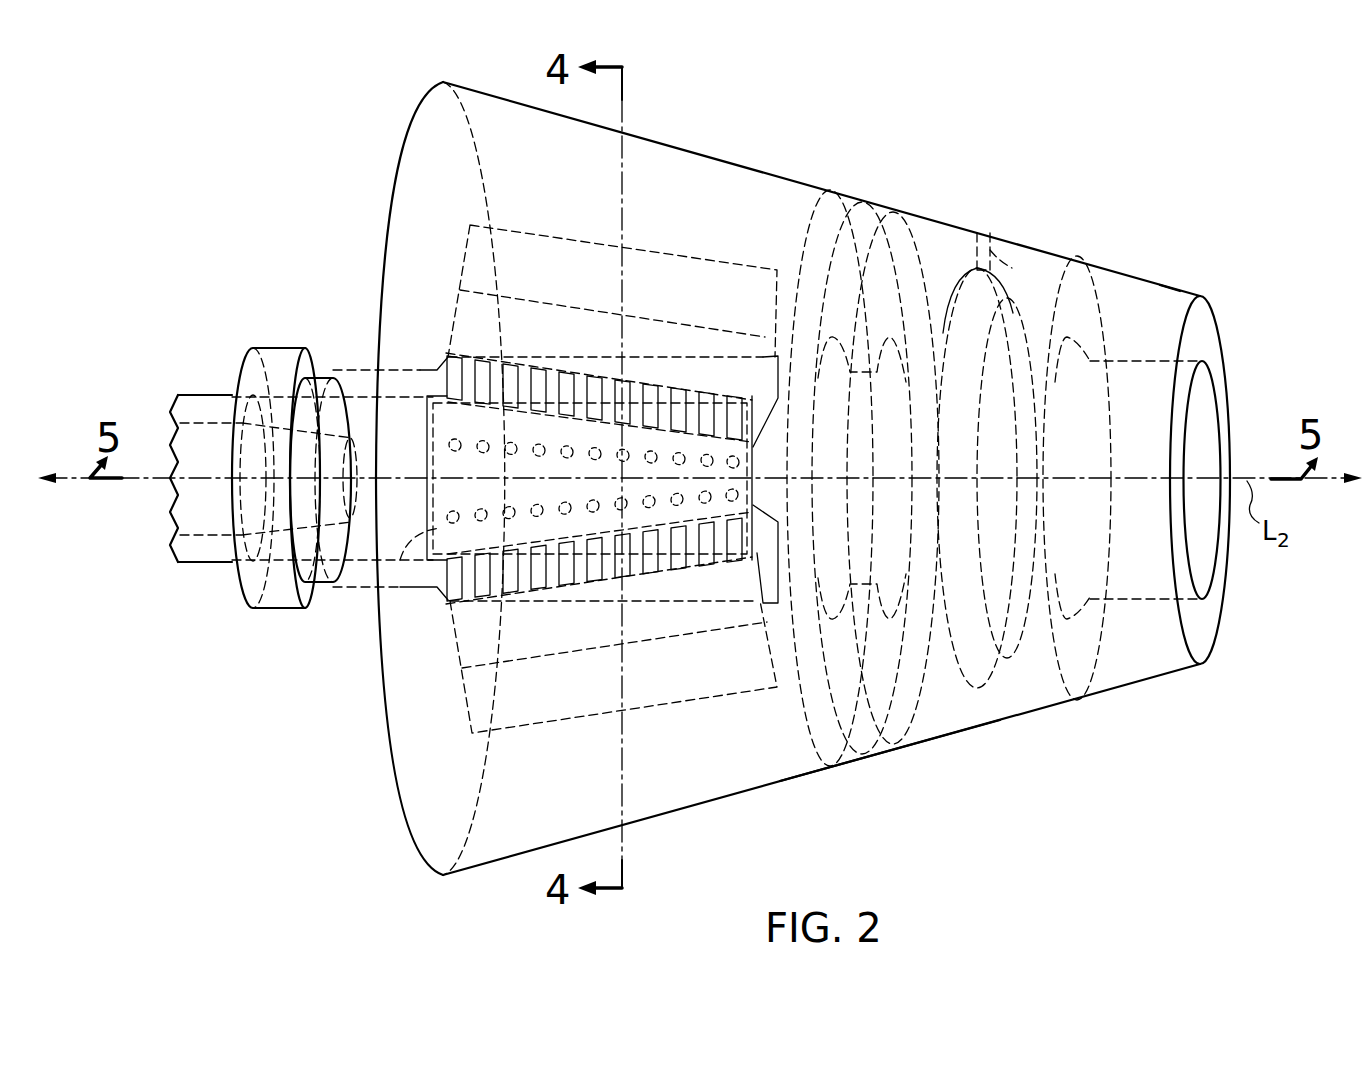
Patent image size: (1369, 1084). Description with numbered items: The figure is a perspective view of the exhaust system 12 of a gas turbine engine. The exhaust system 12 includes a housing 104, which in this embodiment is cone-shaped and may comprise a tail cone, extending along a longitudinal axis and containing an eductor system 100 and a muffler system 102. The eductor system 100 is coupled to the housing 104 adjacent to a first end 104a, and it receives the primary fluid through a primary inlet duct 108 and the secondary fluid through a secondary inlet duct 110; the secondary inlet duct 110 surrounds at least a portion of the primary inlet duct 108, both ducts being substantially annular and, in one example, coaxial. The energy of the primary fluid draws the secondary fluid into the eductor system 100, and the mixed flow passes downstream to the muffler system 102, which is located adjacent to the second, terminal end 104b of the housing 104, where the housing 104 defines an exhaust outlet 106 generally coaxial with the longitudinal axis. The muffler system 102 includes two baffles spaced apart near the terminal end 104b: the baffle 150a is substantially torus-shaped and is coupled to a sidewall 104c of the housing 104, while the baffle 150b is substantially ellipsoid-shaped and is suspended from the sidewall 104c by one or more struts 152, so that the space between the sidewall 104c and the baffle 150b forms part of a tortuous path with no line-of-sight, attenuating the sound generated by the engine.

The exhaust system 12 is at (1220, 172).
The eductor system 100 is at (552, 729).
The muffler system 102 is at (1015, 689).
The housing 104 is at (821, 488).
The first end 104a is at (438, 869).
The second, terminal end 104b is at (1216, 650).
The sidewall 104c is at (942, 727).
The exhaust outlet 106 is at (1218, 567).
The primary inlet duct 108 is at (444, 530).
The secondary inlet duct 110 is at (340, 583).
The baffle 150a is at (858, 760).
The baffle 150b is at (1024, 417).
The strut 152 is at (996, 264).